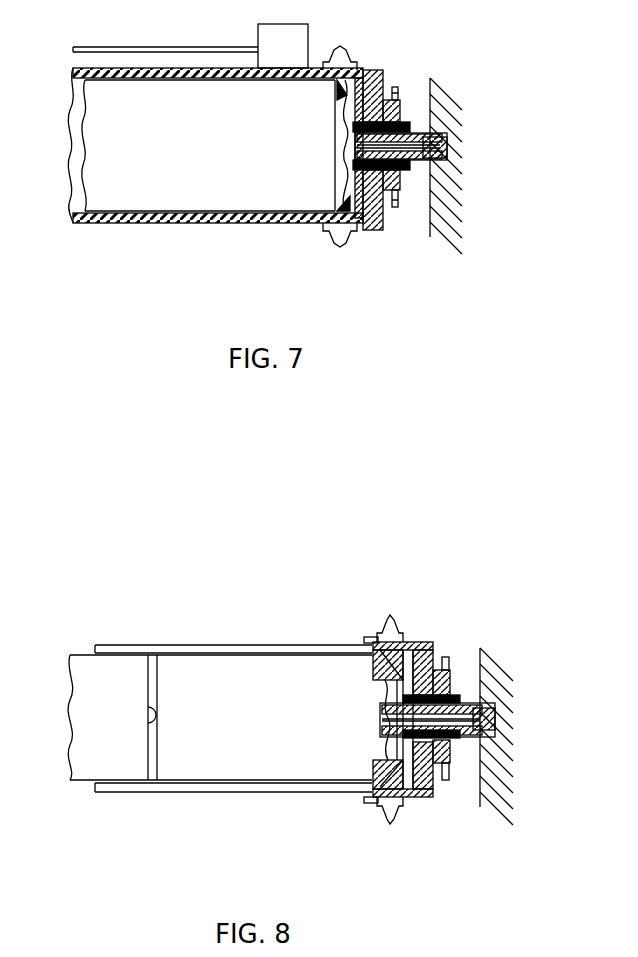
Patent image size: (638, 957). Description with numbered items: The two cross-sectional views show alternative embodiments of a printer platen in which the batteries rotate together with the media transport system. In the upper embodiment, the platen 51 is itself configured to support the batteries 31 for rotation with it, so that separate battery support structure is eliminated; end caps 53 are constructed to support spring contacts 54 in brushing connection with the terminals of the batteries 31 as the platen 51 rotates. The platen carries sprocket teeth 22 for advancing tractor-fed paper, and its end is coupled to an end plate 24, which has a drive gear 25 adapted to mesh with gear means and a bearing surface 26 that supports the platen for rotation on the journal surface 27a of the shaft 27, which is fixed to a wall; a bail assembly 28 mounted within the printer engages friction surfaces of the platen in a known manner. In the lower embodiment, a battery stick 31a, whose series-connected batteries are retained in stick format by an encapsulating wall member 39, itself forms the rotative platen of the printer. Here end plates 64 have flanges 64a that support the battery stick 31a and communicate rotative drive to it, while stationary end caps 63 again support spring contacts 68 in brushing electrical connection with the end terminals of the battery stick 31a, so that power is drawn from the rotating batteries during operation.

In FIG. 7, the sprocket teeth 22 is at (351, 58).
In FIG. 8, the sprocket teeth 22 is at (398, 628).
In FIG. 7, the end plates 24 is at (383, 78).
In FIG. 7, the drive gear 25 is at (403, 98).
In FIG. 7, the bearing surfaces 26 is at (400, 191).
In FIG. 7, the shaft 27 is at (437, 138).
In FIG. 7, the journal surface 27a is at (423, 167).
In FIG. 7, the bail assembly 28 is at (253, 36).
In FIG. 7, the batteries 31 is at (170, 148).
In FIG. 8, the batteries 31 is at (113, 748).
In FIG. 8, the battery stick 31a is at (150, 793).
In FIG. 8, the encapsulating wall member 39 is at (245, 793).
In FIG. 7, the platen 51 is at (167, 224).
In FIG. 7, the end caps 53 is at (358, 216).
In FIG. 7, the spring contacts 54 is at (342, 176).
In FIG. 8, the stationary end caps 63 is at (398, 778).
In FIG. 8, the end plates 64 is at (430, 646).
In FIG. 8, the flanges 64a is at (370, 640).
In FIG. 8, the spring contacts 68 is at (378, 738).